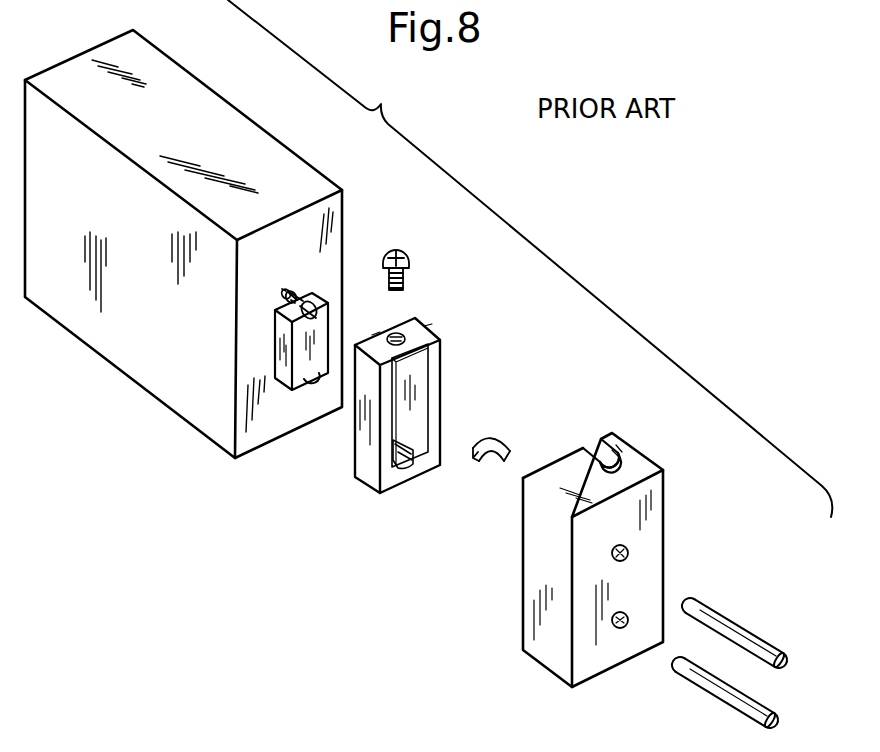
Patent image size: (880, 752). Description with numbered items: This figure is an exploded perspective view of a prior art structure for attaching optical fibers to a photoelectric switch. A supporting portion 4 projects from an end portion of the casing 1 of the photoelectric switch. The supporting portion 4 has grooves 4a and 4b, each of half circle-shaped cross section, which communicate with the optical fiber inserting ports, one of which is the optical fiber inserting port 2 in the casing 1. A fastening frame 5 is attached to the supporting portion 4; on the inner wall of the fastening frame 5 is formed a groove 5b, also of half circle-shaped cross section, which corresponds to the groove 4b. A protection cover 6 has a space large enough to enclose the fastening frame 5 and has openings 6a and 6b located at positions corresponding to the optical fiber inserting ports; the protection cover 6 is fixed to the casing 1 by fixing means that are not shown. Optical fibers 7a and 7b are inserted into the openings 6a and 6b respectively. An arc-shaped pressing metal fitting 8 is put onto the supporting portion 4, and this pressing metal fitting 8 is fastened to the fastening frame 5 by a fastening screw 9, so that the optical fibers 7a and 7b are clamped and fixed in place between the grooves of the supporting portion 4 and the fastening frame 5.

The casing 1 is at (93, 335).
The optical fiber inserting port 2 is at (292, 296).
The supporting portion 4 is at (278, 358).
The groove 4a is at (318, 307).
The groove 4b is at (312, 381).
The fastening frame 5 is at (360, 475).
The groove 5b is at (418, 467).
The protection cover 6 is at (523, 593).
The opening 6a is at (629, 552).
The opening 6b is at (622, 629).
The optical fiber 7a is at (738, 642).
The optical fiber 7b is at (713, 694).
The pressing metal fitting 8 is at (488, 437).
The fastening screw 9 is at (406, 262).